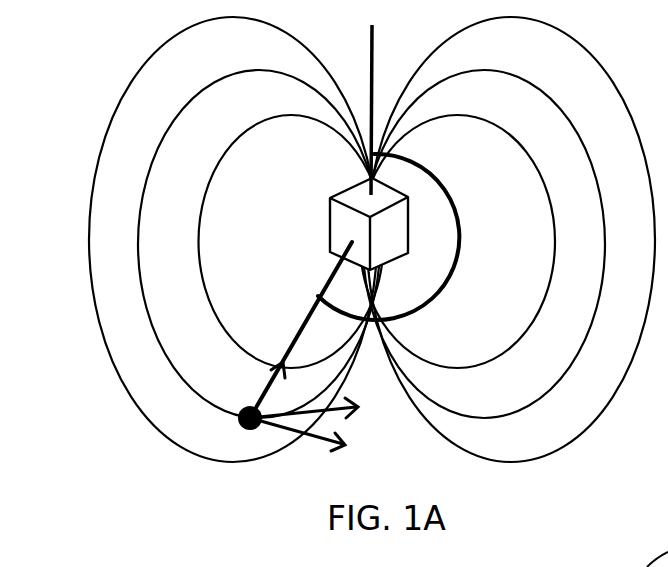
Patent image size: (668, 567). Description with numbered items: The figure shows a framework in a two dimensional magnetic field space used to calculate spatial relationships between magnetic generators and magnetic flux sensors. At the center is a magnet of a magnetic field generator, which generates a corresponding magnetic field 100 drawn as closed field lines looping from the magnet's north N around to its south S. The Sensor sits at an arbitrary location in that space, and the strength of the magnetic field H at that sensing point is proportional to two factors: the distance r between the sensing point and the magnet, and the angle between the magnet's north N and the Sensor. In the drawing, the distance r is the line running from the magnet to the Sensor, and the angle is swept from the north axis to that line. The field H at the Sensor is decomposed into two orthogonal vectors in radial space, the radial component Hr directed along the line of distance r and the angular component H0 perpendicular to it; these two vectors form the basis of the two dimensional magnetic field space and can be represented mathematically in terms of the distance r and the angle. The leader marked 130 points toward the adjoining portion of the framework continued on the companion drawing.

The magnetic field 100 is at (234, 118).
The magnetic sensor system 130 is at (605, 560).
The magnet's north N is at (372, 97).
The south pole S is at (369, 382).
The distance r is at (301, 330).
The radial vector Hr is at (269, 358).
The magnetic flux sensor Sensor is at (209, 420).
The magnetic field strength H is at (319, 405).
The angular vector H0 is at (297, 449).